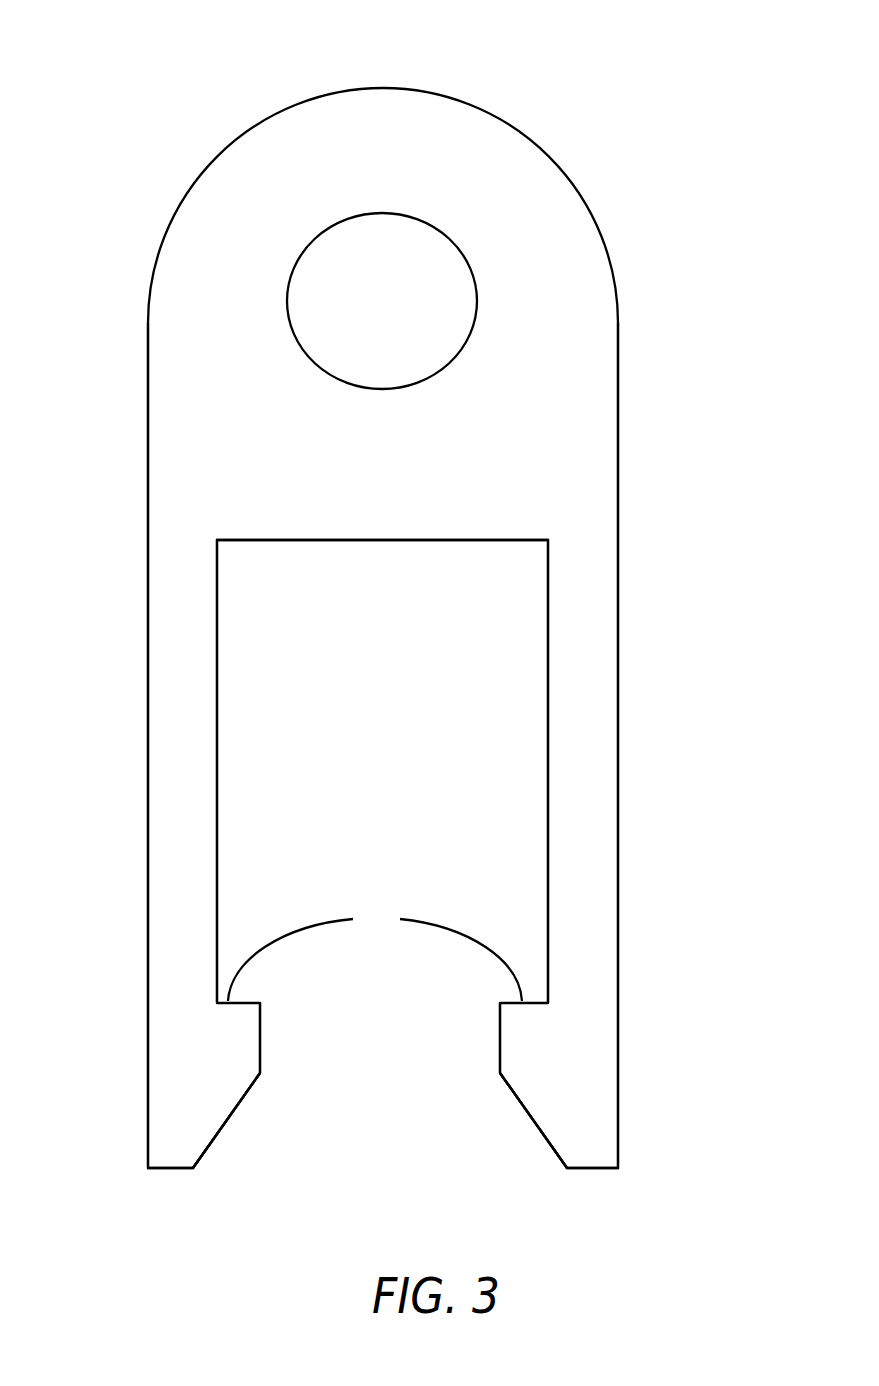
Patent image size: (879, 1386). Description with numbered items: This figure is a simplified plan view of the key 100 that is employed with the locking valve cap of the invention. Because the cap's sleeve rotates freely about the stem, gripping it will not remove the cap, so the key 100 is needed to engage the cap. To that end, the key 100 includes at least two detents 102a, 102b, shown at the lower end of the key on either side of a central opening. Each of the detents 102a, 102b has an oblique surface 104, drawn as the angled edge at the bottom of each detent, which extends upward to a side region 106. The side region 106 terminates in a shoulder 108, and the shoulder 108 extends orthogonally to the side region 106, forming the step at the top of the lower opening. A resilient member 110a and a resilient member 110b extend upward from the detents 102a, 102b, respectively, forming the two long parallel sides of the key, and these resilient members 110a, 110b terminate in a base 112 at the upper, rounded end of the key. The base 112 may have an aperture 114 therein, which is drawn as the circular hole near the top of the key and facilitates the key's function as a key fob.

The key 100 is at (630, 60).
The aperture 114 is at (396, 304).
The base 112 is at (415, 515).
The resilient member 110a is at (162, 739).
The resilient member 110b is at (600, 741).
The detent 102a is at (162, 1046).
The detent 102b is at (598, 1040).
The shoulder 108 is at (375, 952).
The side region 106 is at (500, 1040).
The oblique surface 104 is at (514, 1106).